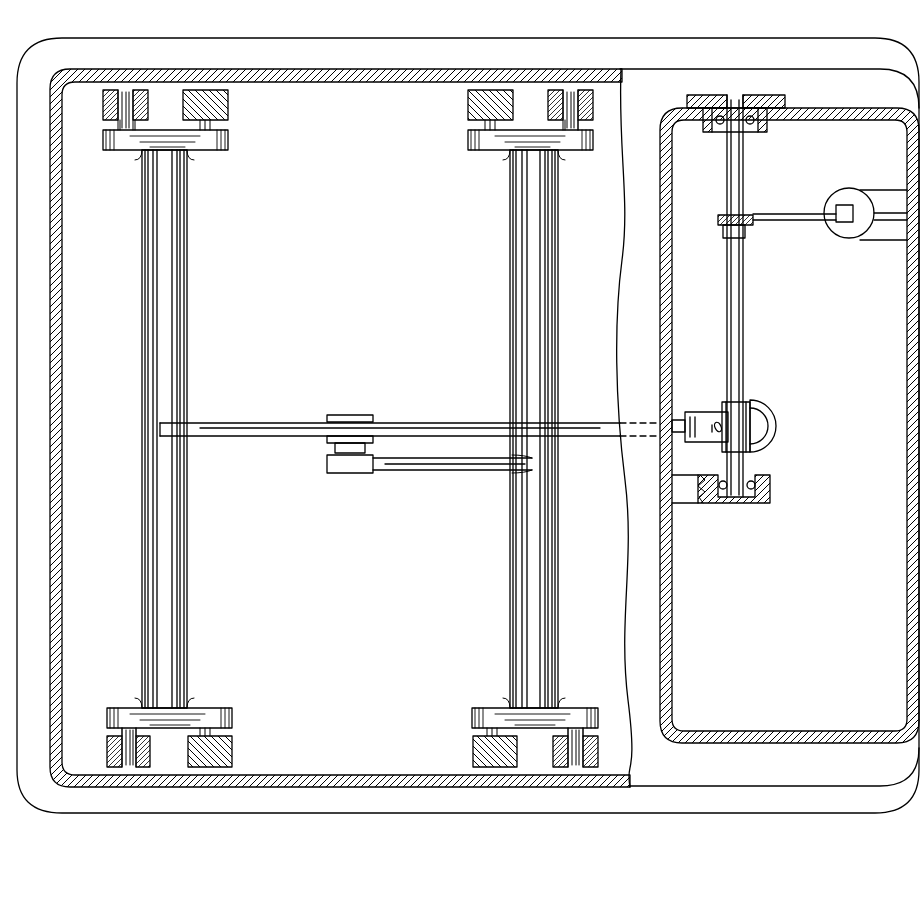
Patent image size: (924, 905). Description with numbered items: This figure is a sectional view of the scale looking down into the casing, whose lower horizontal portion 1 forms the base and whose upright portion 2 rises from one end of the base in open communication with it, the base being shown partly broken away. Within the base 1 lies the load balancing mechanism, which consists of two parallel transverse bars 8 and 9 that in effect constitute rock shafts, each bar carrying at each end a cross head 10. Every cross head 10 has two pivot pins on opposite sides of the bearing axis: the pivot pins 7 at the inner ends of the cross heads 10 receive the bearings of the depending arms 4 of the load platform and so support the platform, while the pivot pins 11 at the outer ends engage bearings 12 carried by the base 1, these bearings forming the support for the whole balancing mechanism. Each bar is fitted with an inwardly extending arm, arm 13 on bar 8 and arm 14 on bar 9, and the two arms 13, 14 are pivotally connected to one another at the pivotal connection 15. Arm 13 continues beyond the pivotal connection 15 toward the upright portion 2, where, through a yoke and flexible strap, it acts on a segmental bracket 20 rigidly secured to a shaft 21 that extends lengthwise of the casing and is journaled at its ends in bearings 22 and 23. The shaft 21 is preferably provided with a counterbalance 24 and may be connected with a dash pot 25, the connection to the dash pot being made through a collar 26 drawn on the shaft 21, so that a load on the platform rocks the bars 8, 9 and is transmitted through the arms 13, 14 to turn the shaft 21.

The lower horizontal portion 1 is at (58, 373).
The upright portion 2 is at (673, 607).
The depending arms 4 is at (228, 105).
The pivot pins 7 is at (212, 126).
The parallel bar 8 is at (175, 353).
The parallel bar 9 is at (512, 311).
The cross head 10 is at (226, 152).
The pivot pins 11 is at (120, 126).
The bearings 12 is at (103, 111).
The arm 13 is at (245, 423).
The arm 14 is at (428, 465).
The pivotal connection 15 is at (340, 447).
The segmental bracket 20 is at (700, 415).
The shaft 21 is at (743, 338).
The bearing 22 is at (727, 130).
The bearing 23 is at (757, 477).
The counterbalance 24 is at (776, 423).
The dash pot 25 is at (849, 238).
The pointer collar 26 is at (718, 228).